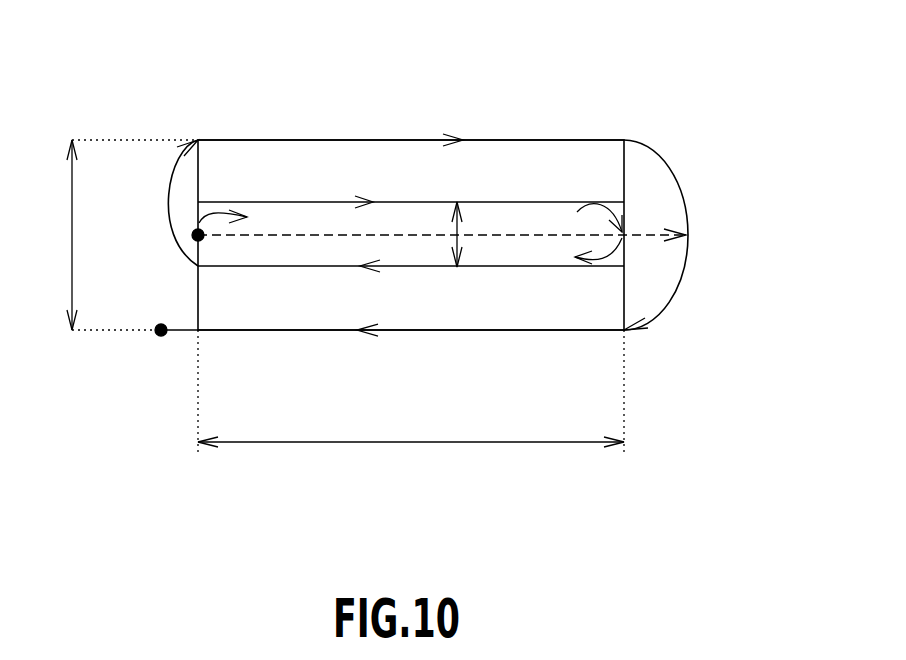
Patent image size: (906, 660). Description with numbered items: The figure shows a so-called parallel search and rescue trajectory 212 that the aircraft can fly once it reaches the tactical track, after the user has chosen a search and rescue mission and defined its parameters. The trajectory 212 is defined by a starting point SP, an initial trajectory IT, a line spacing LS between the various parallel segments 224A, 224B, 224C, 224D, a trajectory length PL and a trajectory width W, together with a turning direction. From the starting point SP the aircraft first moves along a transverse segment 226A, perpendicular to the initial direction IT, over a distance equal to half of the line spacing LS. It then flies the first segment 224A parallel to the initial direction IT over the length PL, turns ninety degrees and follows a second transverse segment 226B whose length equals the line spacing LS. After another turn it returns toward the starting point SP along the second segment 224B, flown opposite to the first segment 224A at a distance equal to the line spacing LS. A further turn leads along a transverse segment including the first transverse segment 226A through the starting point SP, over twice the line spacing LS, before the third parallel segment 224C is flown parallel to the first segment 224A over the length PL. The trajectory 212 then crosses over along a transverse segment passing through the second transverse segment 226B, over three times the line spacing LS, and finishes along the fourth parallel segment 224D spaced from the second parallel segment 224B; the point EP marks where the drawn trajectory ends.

The search and rescue trajectory 212 is at (553, 103).
The first segment 224A is at (300, 202).
The second segment 224B is at (286, 267).
The third parallel segment 224C is at (373, 140).
The fourth parallel segment 224D is at (440, 331).
The first transverse segment 226A is at (198, 223).
The second transverse segment 226B is at (627, 218).
The line spacing LS is at (460, 227).
The initial trajectory IT is at (442, 250).
The trajectory width W is at (122, 235).
The trajectory length PL is at (411, 407).
The starting point SP is at (198, 235).
The end point EP is at (160, 337).